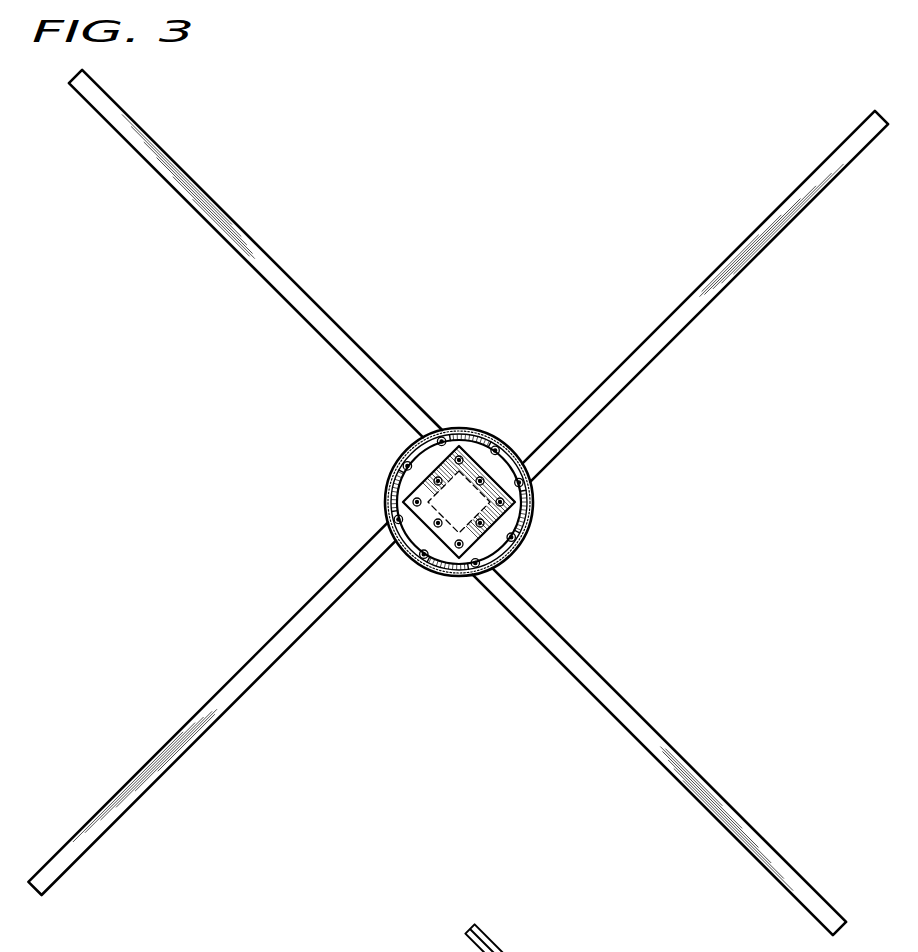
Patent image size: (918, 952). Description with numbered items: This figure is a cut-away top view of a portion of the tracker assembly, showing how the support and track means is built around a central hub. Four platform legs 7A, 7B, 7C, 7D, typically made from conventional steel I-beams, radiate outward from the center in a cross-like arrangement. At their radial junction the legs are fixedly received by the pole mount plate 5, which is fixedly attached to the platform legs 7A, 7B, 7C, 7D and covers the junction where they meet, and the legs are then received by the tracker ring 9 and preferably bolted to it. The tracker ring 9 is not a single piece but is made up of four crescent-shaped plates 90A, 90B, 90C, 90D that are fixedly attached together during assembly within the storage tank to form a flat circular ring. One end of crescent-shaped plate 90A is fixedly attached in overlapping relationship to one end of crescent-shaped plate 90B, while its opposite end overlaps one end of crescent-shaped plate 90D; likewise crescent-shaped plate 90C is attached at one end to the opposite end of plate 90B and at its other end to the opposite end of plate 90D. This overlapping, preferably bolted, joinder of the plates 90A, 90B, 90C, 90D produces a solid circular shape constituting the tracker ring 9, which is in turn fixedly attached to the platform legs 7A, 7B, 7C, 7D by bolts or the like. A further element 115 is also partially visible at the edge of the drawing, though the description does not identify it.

The pole mount plate 5 is at (488, 536).
The platform leg 7A is at (140, 796).
The platform leg 7B is at (653, 729).
The platform leg 7C is at (710, 307).
The platform leg 7D is at (243, 229).
The tracker ring 9 is at (393, 466).
The crescent-shaped plate 90A is at (393, 499).
The crescent-shaped plate 90B is at (452, 576).
The crescent-shaped plate 90C is at (528, 514).
The crescent-shaped plate 90D is at (462, 430).
The strut 115 is at (541, 950).